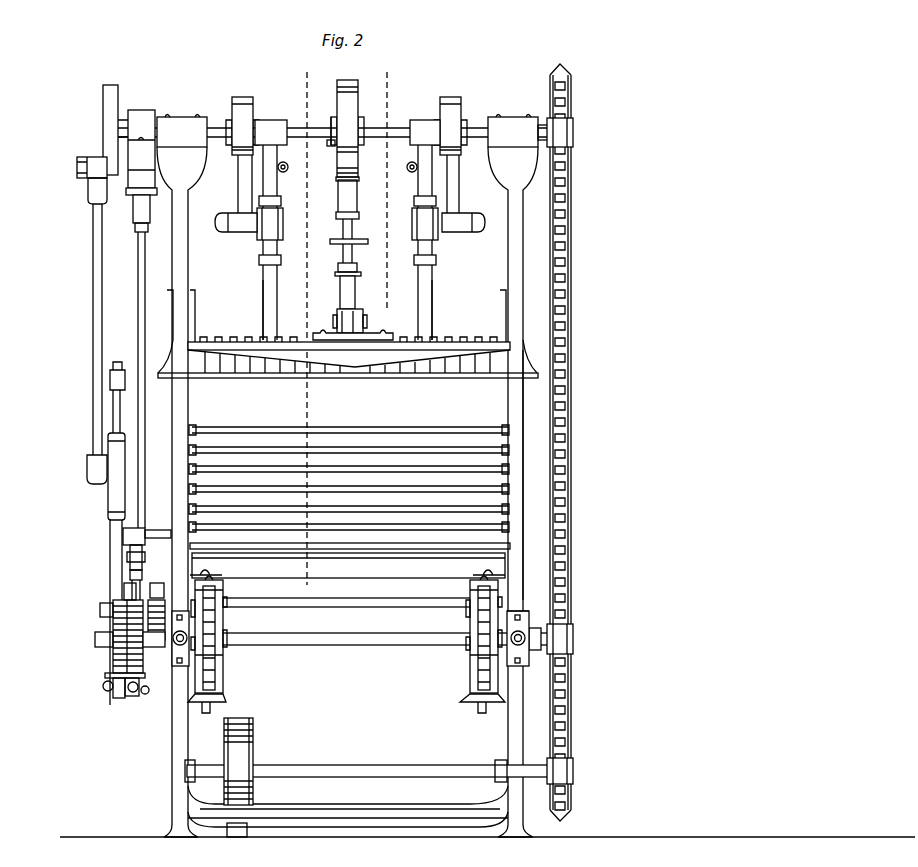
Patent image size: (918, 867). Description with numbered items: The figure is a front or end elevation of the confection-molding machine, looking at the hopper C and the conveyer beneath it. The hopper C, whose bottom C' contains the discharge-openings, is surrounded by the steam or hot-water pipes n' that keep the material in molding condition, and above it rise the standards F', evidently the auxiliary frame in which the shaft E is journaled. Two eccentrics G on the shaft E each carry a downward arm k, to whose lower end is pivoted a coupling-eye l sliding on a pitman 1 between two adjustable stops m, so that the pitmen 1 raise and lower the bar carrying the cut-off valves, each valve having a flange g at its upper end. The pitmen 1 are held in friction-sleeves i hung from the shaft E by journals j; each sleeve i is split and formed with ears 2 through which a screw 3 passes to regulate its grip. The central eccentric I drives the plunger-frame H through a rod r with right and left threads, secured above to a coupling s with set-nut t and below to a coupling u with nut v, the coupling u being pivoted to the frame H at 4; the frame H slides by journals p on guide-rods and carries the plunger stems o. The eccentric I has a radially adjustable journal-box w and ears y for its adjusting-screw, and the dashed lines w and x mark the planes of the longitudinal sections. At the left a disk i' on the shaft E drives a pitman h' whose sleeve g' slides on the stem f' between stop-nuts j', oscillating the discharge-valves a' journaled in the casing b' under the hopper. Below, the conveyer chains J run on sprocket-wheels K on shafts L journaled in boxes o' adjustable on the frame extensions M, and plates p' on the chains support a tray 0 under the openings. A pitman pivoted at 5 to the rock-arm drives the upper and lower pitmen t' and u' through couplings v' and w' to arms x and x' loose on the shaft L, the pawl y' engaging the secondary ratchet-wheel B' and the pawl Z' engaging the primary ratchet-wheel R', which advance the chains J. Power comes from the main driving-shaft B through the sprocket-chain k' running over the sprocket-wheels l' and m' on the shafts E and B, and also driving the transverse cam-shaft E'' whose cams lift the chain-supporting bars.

The shaft E is at (333, 120).
The frame standards F' is at (347, 476).
The eccentrics G is at (240, 97).
The journals j is at (347, 120).
The eccentric I is at (350, 82).
The flange g is at (325, 126).
The screw-threaded ears y is at (330, 154).
The journal-box w is at (315, 320).
The arm x is at (405, 185).
The friction-sleeves i is at (347, 242).
The pitmen 1 is at (277, 295).
The stops m is at (358, 228).
The coupling-eye l is at (347, 224).
The arm k is at (349, 193).
The ears 2 is at (288, 167).
The screw 3 is at (347, 156).
The coupling s is at (338, 196).
The set-nut t is at (340, 215).
The rod r is at (343, 237).
The nut v is at (358, 266).
The coupling u is at (358, 292).
The pivot 4 is at (354, 318).
The horizontal frame H is at (155, 752).
The stems o is at (347, 373).
The hopper C is at (348, 394).
The journals p is at (347, 331).
The steam or hot-water pipes n' is at (349, 469).
The casing b' is at (350, 543).
The tray 0 is at (348, 565).
The shafts L is at (360, 646).
The shaft stub E'' is at (538, 624).
The boxes o' is at (357, 652).
The extensions M is at (518, 594).
The sprocket-wheels K is at (214, 676).
The endless sprocket-chains J is at (214, 686).
The horizontal plates p' is at (346, 715).
The main driving-shaft B is at (370, 760).
The sprocket-chain k' is at (571, 442).
The sprocket-wheel l' is at (566, 124).
The sprocket-wheel m' is at (577, 766).
The disk i' is at (93, 131).
The pitman h' is at (82, 331).
The nuts j' is at (119, 367).
The stem f' is at (122, 411).
The sleeve g' is at (103, 476).
The couplings v' is at (142, 555).
The discharge-valves a' is at (158, 524).
The upper pitman t' is at (143, 557).
The gear wheel R' is at (120, 636).
The connection point 5 is at (100, 608).
The pawl y' is at (112, 590).
The arm x' is at (113, 683).
The secondary ratchet-wheel B' is at (146, 680).
The lower pitman u' is at (144, 689).
The couplings w' is at (133, 700).
The pawl Z' is at (110, 709).
The hopper bottom C' is at (522, 475).